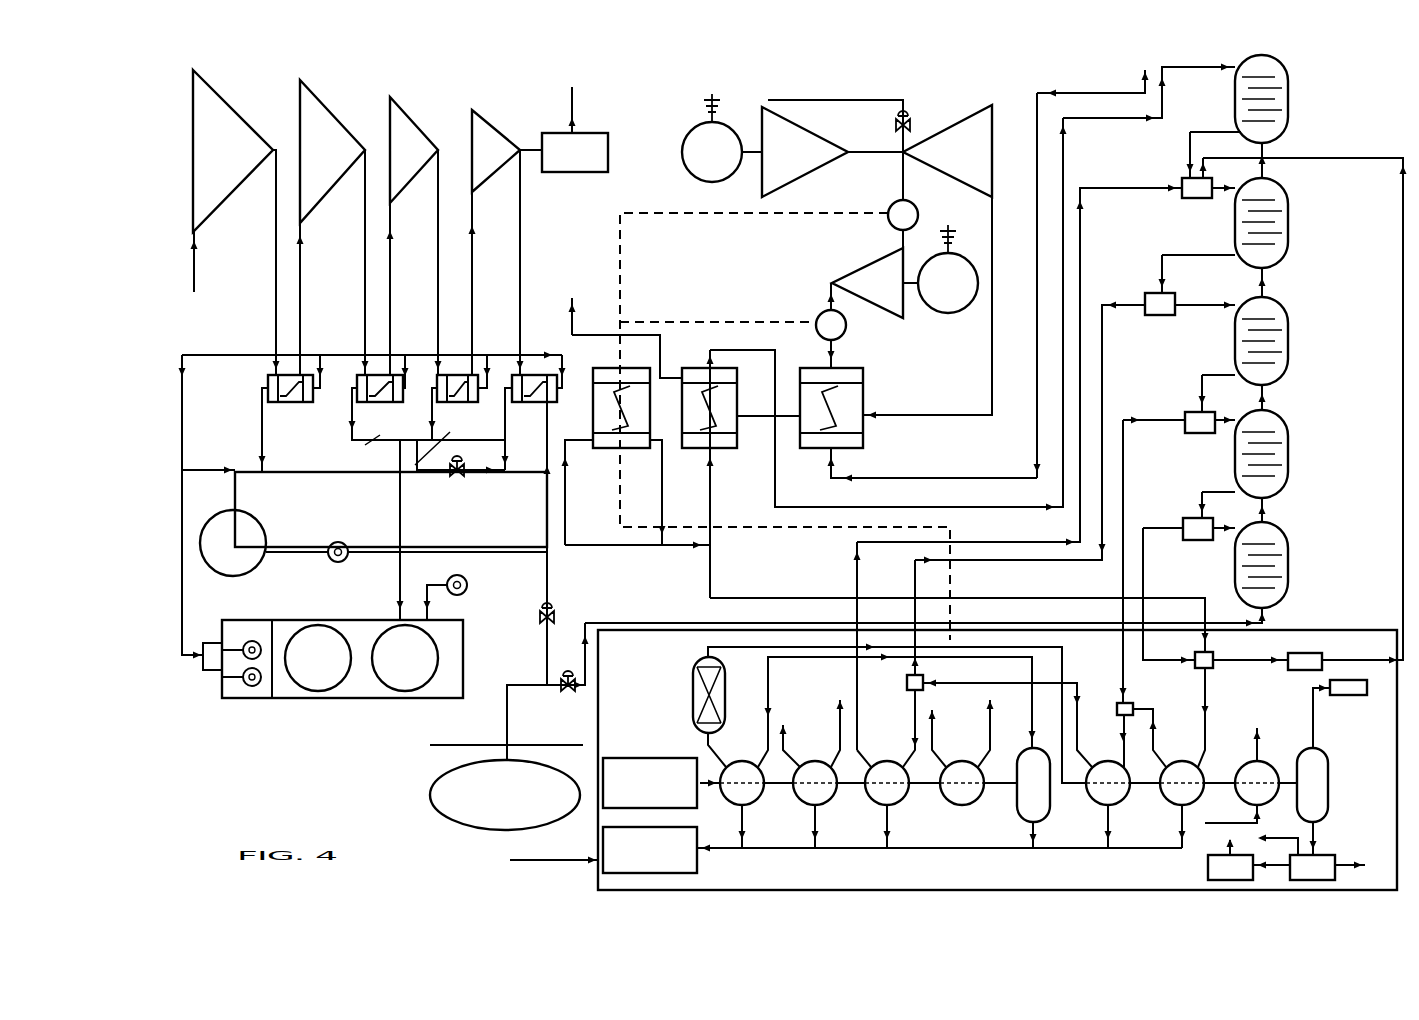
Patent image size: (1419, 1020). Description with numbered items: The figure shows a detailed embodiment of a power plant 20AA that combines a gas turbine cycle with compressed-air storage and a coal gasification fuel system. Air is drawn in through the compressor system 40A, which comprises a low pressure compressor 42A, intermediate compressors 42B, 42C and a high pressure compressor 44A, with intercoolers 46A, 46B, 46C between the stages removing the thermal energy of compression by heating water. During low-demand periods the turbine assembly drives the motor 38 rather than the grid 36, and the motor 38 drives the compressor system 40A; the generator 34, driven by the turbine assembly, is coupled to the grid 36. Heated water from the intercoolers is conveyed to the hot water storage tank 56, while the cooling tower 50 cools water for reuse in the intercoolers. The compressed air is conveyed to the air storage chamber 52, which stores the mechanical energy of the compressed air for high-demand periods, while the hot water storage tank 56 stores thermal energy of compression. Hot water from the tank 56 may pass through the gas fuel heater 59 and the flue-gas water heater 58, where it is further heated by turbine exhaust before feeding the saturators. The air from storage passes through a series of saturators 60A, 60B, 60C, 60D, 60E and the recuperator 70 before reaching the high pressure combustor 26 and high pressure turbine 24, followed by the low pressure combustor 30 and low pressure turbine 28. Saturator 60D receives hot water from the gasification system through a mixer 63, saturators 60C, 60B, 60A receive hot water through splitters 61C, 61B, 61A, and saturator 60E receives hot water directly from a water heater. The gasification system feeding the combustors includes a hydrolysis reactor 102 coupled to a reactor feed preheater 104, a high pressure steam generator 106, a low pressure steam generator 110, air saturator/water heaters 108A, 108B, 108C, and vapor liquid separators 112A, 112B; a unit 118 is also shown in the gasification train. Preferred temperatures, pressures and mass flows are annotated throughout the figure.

The power plant 20AA is at (355, 765).
The compressor system 40A is at (272, 90).
The low pressure compressor 42A is at (270, 161).
The intermediate compressor 42B is at (347, 161).
The intermediate compressor 42C is at (427, 161).
The high pressure compressor 44A is at (507, 161).
The intercooler 46A is at (268, 383).
The intercooler 46B is at (357, 381).
The intercooler 46C is at (465, 358).
The cooling tower 50 is at (345, 700).
The air storage chamber 52 is at (455, 825).
The hot water storage tank 56 is at (240, 578).
The flue-gas water heater 58 is at (737, 400).
The gas fuel heater 59 is at (636, 448).
The recuperator 70 is at (865, 407).
The generator 34 is at (682, 152).
The grid 36 is at (724, 98).
The motor 38 is at (612, 173).
The high pressure turbine 24 is at (795, 170).
The high pressure combustor 26 is at (846, 330).
The low pressure turbine 28 is at (975, 187).
The low pressure combustor 30 is at (912, 228).
The saturator 60A is at (1285, 597).
The saturator 60B is at (1290, 468).
The saturator 60C is at (1290, 352).
The saturator 60D is at (1290, 230).
The saturator 60E is at (1290, 88).
The splitter 61A is at (1190, 542).
The splitter 61B is at (1185, 412).
The splitter 61C is at (1152, 293).
The mixer 63 is at (1184, 178).
The hydrolysis reactor 102 is at (693, 705).
The reactor feed preheater 104 is at (733, 802).
The high pressure steam generator 106 is at (805, 804).
The air saturator/water heater 108A is at (883, 806).
The air saturator/water heater 108B is at (1100, 806).
The air saturator/water heater 108C is at (1175, 806).
The low pressure steam generator 110 is at (960, 806).
The vapor liquid separator 112A is at (1017, 815).
The vapor liquid separator 112B is at (1328, 802).
The cooler unit 118 is at (1272, 765).